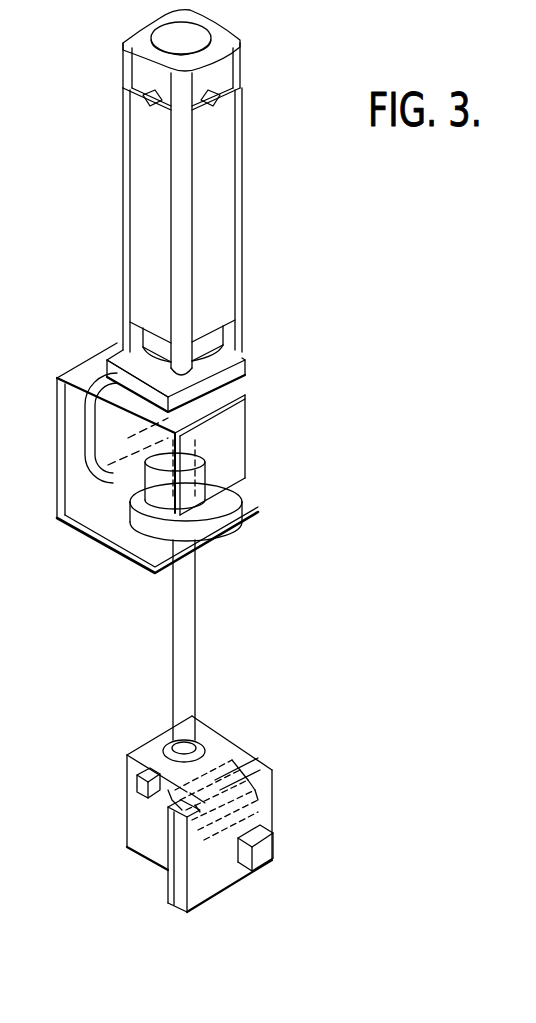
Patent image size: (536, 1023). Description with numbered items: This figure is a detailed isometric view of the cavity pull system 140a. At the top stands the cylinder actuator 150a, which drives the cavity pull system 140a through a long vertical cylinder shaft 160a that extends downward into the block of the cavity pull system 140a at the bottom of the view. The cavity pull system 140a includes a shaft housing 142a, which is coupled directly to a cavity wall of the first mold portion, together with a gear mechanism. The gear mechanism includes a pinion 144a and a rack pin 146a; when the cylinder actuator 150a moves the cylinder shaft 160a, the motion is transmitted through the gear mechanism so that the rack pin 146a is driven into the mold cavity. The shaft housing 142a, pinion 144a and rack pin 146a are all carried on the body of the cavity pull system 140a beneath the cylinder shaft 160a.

The cylinder actuator 150a is at (222, 202).
The cylinder shaft 160a is at (197, 612).
The cavity pull system 140a is at (127, 797).
The shaft housing 142a is at (222, 763).
The pinion 144a is at (248, 792).
The rack pin 146a is at (243, 865).